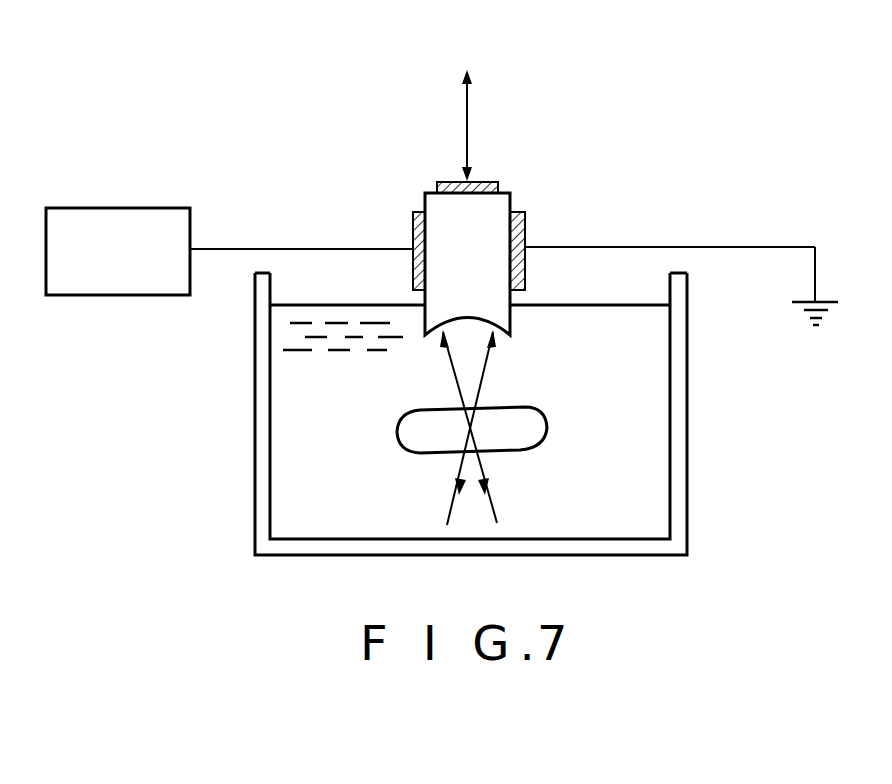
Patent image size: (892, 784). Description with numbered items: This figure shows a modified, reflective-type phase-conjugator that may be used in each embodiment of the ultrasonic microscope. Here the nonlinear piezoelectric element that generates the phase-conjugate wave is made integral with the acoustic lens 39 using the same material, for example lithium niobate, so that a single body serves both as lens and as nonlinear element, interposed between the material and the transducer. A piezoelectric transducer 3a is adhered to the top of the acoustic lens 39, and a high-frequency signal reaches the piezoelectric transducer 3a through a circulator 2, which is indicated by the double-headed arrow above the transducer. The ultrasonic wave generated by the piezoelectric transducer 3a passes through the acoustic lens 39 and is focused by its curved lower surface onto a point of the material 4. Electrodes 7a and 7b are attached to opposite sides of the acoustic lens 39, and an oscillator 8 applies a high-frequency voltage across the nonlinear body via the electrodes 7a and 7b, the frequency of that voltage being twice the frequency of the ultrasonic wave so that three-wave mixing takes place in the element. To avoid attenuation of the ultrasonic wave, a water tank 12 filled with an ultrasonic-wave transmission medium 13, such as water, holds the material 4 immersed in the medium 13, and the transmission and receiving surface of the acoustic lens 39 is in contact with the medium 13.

The circulator 2 is at (449, 110).
The piezoelectric transducer 3a is at (498, 185).
The material 4 is at (548, 417).
The electrode 7a is at (413, 225).
The electrode 7b is at (526, 221).
The oscillator 8 is at (121, 208).
The water tank 12 is at (680, 378).
The ultrasonic-wave transmission medium 13 is at (283, 362).
The acoustic lens 39 is at (430, 196).